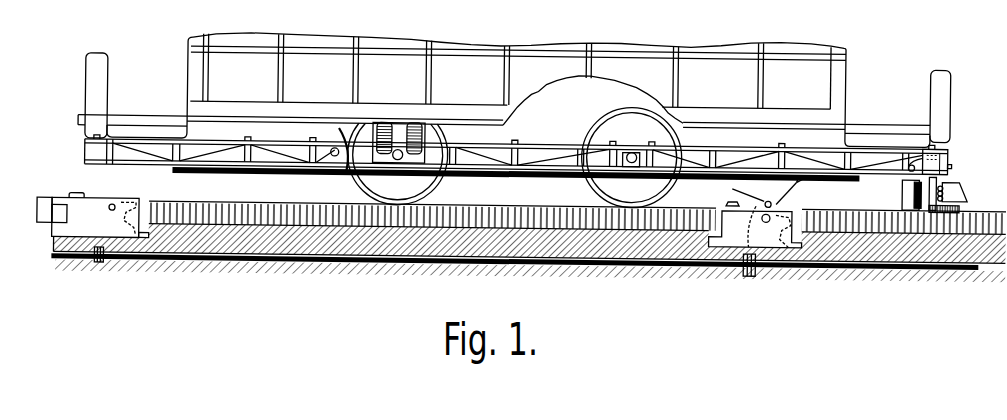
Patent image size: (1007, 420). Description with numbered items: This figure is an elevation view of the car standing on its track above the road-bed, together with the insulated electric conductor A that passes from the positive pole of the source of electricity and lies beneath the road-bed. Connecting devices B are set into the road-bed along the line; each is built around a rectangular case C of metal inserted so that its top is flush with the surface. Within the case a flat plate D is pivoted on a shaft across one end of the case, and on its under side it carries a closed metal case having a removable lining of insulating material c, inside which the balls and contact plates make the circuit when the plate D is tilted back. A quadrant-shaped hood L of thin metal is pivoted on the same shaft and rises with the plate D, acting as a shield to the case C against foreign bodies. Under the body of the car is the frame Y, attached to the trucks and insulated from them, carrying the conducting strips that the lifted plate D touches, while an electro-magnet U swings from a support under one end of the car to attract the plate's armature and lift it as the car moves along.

The electric conductor A is at (561, 268).
The connecting device B is at (123, 208).
The rectangular case C is at (420, 220).
The frame Y is at (593, 110).
The quadrant-shaped hood L is at (733, 197).
The lining of insulating material c is at (767, 199).
The flat plate D is at (792, 197).
The electro-magnet U is at (905, 191).